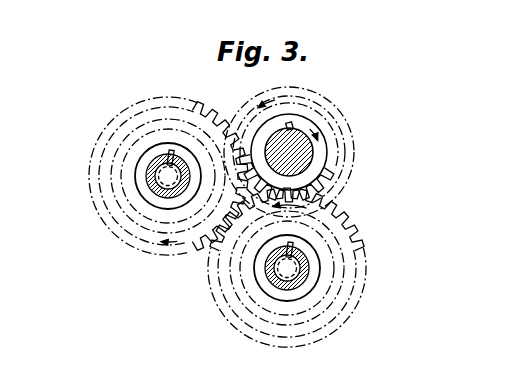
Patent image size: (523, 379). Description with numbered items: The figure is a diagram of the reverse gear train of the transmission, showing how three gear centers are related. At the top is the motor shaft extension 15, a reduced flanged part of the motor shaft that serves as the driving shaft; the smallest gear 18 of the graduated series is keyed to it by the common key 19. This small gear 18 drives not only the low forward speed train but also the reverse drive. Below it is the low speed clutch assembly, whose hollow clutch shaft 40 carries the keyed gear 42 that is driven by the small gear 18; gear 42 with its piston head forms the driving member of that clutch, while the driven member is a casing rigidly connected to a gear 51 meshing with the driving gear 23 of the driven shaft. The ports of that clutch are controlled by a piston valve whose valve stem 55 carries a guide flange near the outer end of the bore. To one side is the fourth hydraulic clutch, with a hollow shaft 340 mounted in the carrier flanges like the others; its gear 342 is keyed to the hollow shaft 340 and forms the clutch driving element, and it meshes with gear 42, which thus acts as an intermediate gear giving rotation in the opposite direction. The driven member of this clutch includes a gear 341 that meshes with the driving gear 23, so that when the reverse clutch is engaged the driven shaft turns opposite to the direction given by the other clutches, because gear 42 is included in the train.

The motor shaft extension 15 is at (297, 155).
The smallest gear 18 is at (312, 173).
The common key 19 is at (291, 128).
The driving gear of the driven shaft 23 is at (305, 95).
The hollow clutch shaft 40 is at (305, 270).
The gear 42 is at (343, 217).
The gear 51 is at (334, 292).
The valve stem 55 is at (322, 271).
The hollow shaft 340 is at (152, 192).
The gear 341 is at (113, 182).
The gear 342 is at (190, 253).